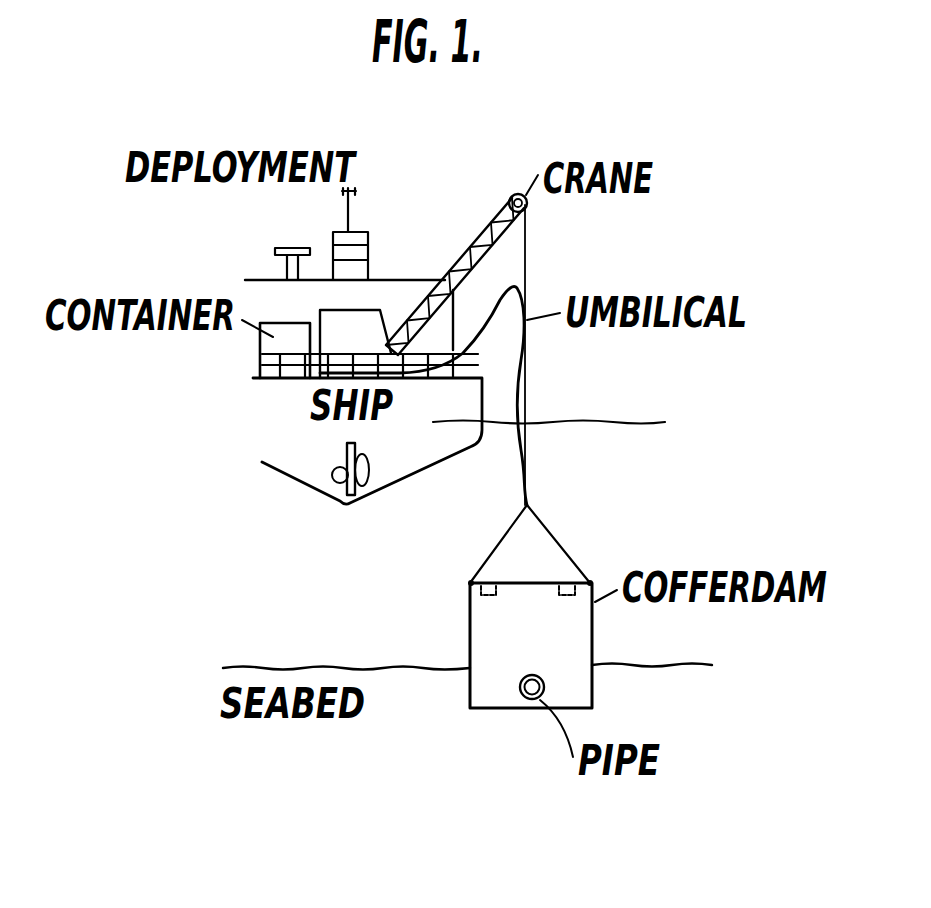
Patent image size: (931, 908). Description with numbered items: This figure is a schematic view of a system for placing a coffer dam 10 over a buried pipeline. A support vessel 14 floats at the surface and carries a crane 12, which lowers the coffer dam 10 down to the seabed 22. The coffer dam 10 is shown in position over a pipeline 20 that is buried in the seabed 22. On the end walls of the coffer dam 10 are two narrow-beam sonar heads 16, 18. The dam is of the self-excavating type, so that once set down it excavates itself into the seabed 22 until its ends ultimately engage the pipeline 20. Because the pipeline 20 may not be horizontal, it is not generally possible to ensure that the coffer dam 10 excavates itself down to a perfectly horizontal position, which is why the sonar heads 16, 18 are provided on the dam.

The coffer dam 10 is at (483, 624).
The crane 12 is at (480, 237).
The support vessel 14 is at (422, 250).
The narrow-beam sonar head 16 is at (478, 580).
The narrow-beam sonar head 18 is at (572, 580).
The pipeline 20 is at (522, 698).
The seabed 22 is at (382, 675).